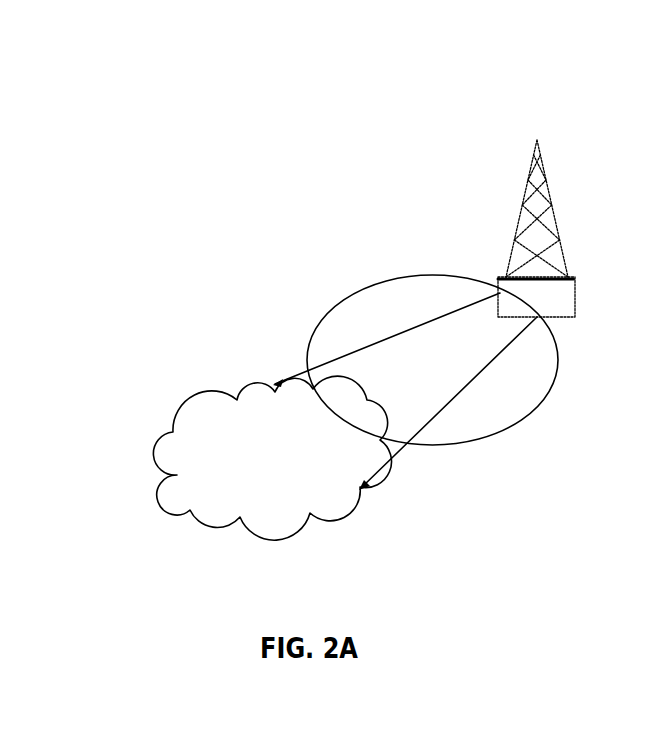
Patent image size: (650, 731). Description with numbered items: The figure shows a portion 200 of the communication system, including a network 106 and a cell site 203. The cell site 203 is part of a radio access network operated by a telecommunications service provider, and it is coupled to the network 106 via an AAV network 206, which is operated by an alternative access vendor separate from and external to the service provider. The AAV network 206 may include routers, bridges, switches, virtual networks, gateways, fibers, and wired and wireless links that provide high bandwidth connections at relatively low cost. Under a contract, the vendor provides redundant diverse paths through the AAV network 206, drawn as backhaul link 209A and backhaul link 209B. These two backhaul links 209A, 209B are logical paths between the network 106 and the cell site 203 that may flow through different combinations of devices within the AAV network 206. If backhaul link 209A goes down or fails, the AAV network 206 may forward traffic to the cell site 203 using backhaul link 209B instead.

The portion of the communication system 200 is at (282, 80).
The cell site 203 is at (527, 175).
The AAV network 206 is at (340, 302).
The backhaul link 209A is at (377, 343).
The backhaul link 209B is at (427, 425).
The network 106 is at (152, 450).